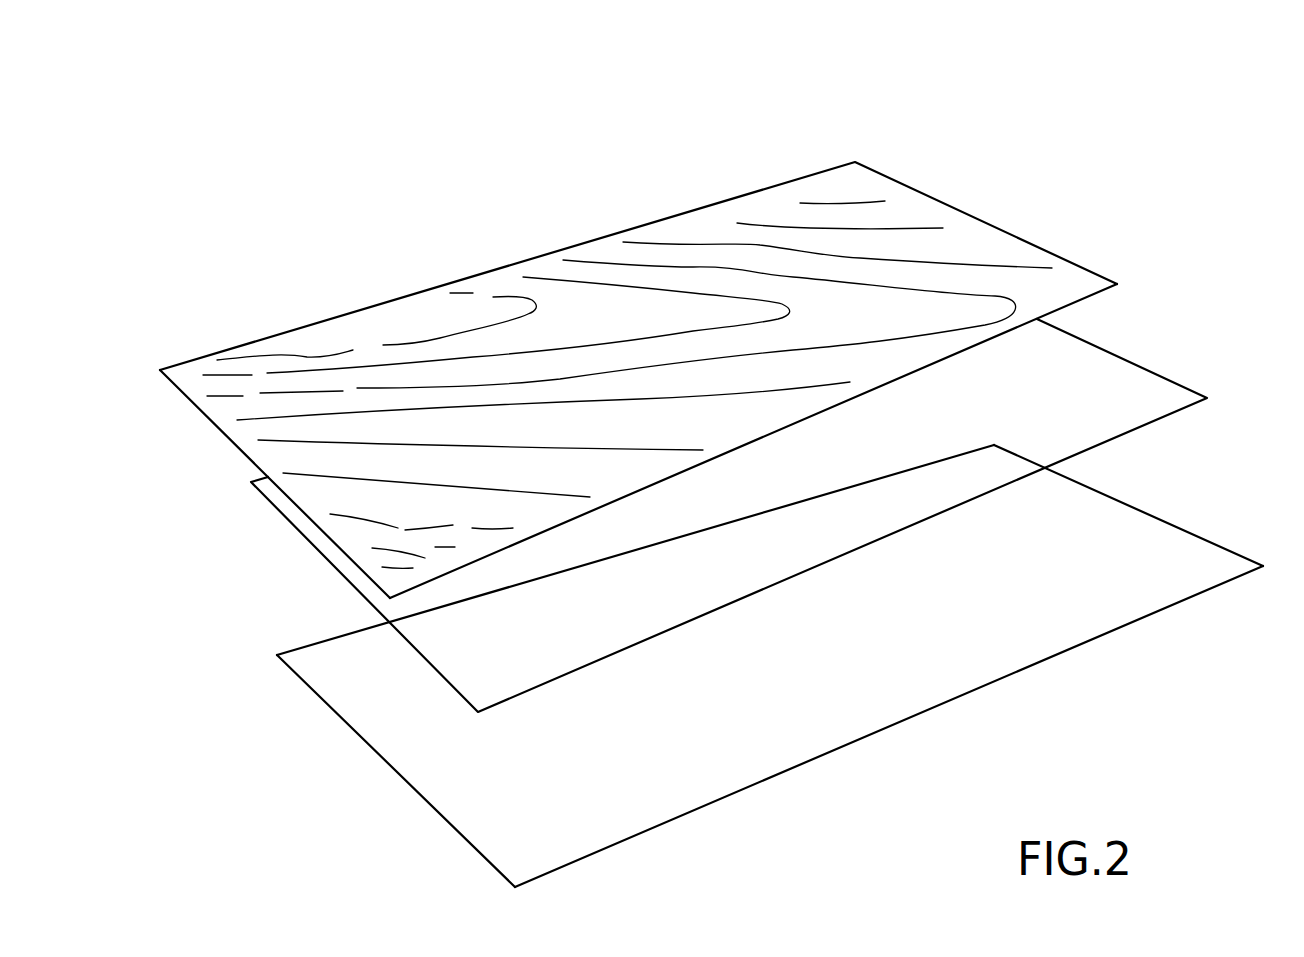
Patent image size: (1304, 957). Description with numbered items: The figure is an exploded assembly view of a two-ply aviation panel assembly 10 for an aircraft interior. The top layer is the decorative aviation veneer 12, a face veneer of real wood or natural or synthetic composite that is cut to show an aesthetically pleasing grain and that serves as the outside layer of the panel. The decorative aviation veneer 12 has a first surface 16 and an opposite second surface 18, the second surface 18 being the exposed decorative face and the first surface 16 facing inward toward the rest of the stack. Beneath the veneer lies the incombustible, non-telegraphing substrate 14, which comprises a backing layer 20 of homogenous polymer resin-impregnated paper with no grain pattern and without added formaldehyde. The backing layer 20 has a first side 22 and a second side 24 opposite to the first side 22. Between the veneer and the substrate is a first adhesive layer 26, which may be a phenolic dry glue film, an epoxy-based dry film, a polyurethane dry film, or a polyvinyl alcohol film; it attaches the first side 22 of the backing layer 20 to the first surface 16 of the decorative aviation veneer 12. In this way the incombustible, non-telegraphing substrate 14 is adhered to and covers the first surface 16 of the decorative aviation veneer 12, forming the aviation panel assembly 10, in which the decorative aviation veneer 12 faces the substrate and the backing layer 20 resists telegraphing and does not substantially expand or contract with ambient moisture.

The aviation panel assembly 10 is at (547, 150).
The decorative aviation veneer 12 is at (1053, 245).
The incombustible, non-telegraphing substrate 14 is at (777, 666).
The first surface 16 is at (1097, 296).
The second surface 18 is at (897, 182).
The backing layer 20 is at (1198, 528).
The first side 22 is at (1088, 592).
The second side 24 is at (1113, 630).
The first adhesive layer 26 is at (1128, 350).